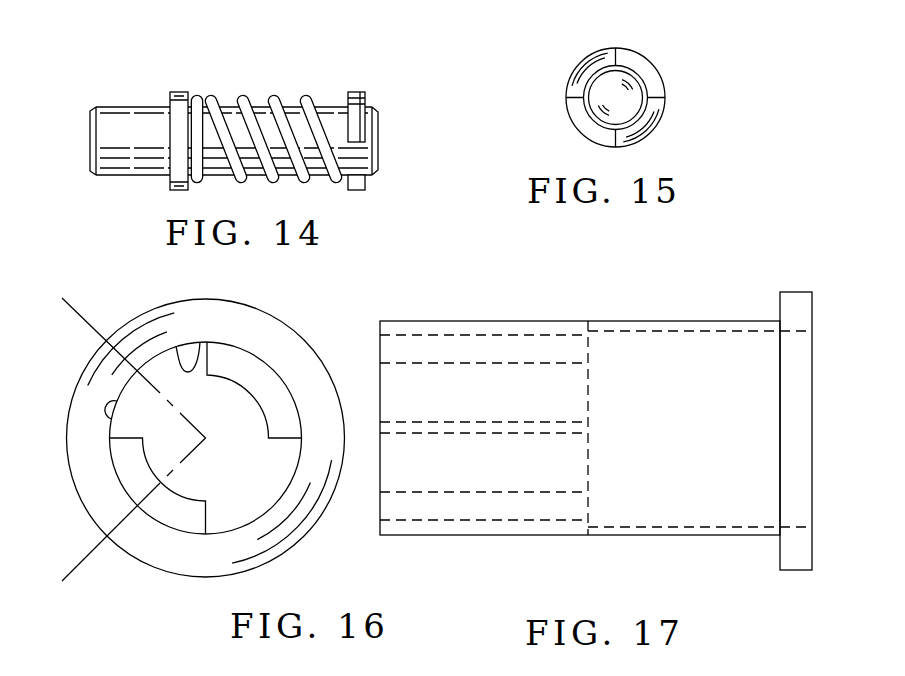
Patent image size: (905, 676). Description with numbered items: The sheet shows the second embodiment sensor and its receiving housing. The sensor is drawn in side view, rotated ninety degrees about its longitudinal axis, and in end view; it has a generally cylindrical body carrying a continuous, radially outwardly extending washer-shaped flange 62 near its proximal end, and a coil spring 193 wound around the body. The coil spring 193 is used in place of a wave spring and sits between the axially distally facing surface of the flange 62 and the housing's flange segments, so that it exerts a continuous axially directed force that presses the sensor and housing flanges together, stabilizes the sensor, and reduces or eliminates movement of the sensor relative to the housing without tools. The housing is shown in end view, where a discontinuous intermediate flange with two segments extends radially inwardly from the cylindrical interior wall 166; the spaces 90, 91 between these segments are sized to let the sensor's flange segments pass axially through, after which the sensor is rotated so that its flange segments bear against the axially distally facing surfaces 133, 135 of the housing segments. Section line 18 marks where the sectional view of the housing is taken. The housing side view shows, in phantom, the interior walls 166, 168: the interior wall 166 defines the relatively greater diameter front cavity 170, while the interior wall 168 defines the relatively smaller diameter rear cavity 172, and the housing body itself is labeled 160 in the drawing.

In FIG. 14, the washer-shaped flange 62 is at (175, 88).
In FIG. 14, the coil spring 193 is at (302, 96).
In FIG. 16, the section line 18— 18 is at (105, 580).
In FIG. 16, the space between flange segments 90 is at (113, 405).
In FIG. 16, the axially distally facing surface 133 is at (254, 390).
In FIG. 16, the axially distally facing surface 135 is at (170, 512).
In FIG. 16, the space between flange segments 91 is at (226, 530).
In FIG. 16, the interior wall 166 is at (196, 368).
In FIG. 17, the interior wall 166 is at (757, 527).
In FIG. 17, the bobbin body 160 is at (595, 410).
In FIG. 17, the front cavity 170 is at (697, 433).
In FIG. 17, the rear cavity 172 is at (485, 470).
In FIG. 17, the interior wall 168 is at (490, 502).